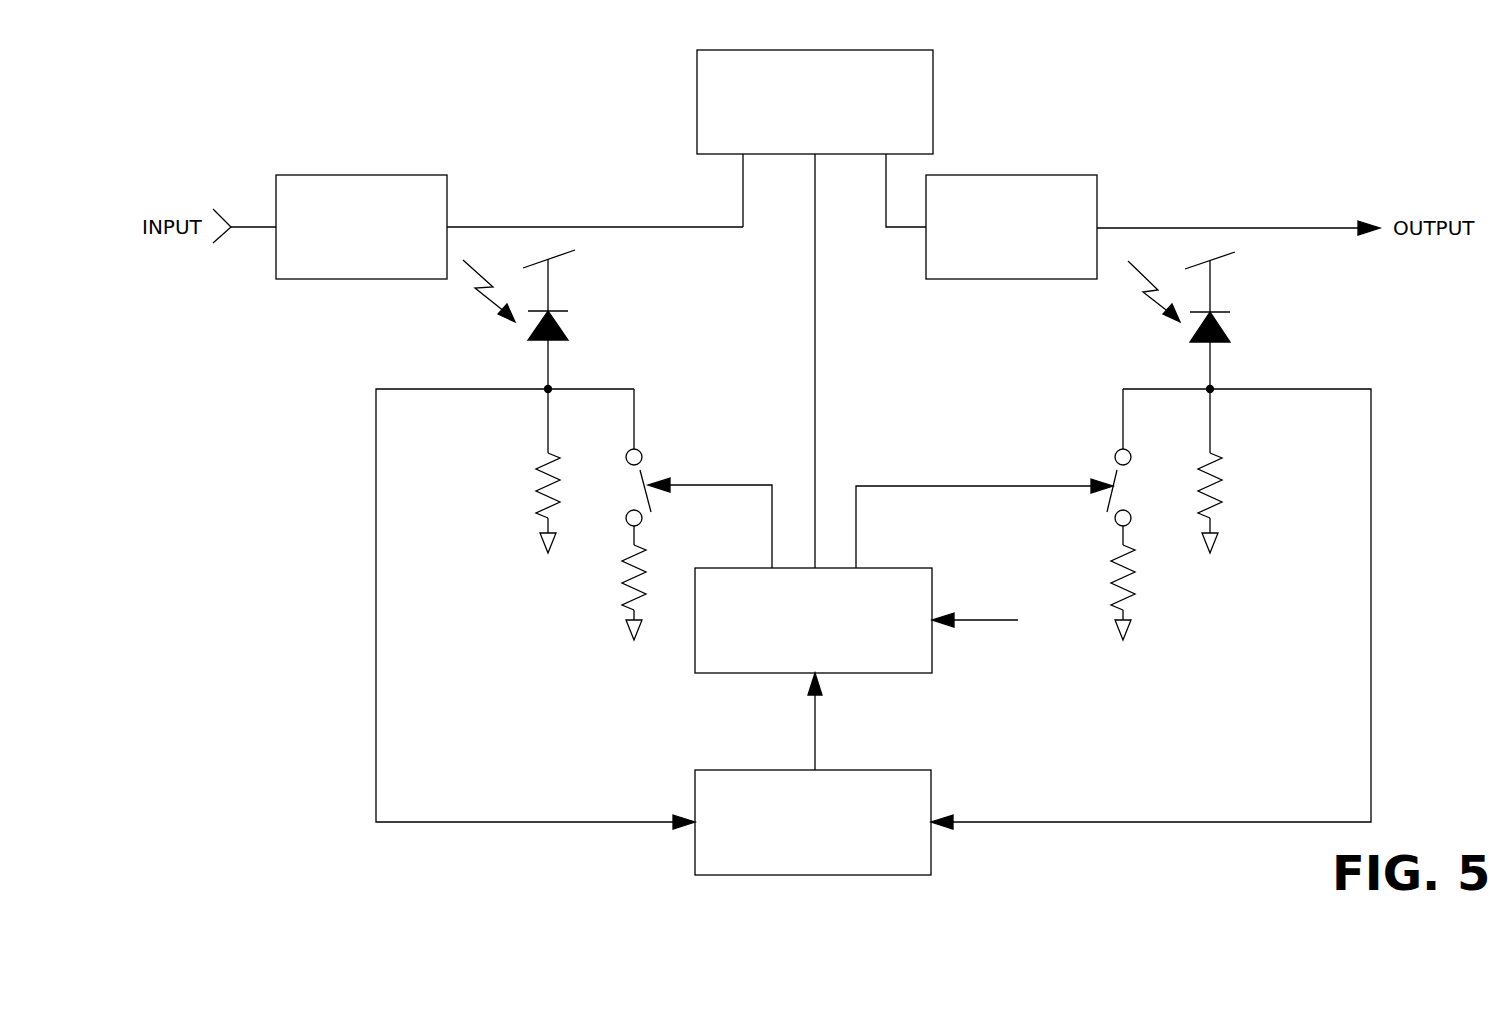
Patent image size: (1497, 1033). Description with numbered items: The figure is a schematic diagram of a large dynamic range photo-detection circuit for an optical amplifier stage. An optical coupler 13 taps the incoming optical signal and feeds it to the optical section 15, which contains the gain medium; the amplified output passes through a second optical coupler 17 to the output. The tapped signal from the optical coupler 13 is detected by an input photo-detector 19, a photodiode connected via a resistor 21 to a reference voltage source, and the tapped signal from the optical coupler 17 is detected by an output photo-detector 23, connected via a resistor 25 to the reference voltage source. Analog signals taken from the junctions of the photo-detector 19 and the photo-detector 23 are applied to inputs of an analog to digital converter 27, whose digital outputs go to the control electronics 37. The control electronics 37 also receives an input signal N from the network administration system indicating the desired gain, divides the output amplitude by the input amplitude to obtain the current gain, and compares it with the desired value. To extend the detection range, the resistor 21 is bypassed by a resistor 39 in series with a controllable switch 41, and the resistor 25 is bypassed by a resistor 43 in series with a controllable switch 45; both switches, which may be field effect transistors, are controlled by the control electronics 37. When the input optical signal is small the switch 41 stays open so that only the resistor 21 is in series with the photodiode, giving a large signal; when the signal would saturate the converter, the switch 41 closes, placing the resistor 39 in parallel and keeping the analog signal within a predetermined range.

The optical coupler 13 is at (375, 175).
The optical section 15 is at (697, 100).
The optical coupler 17 is at (1035, 175).
The input photo-detector 19 is at (565, 327).
The resistor 21 is at (537, 490).
The output photo-detector 23 is at (1227, 330).
The resistor 25 is at (1213, 492).
The analog to digital converter 27 is at (763, 770).
The control electronics 37 is at (860, 673).
The resistor 39 is at (620, 590).
The controllable switch 41 is at (640, 470).
The resistor 43 is at (1127, 595).
The controllable switch 45 is at (1117, 470).
The input signal N is at (980, 620).